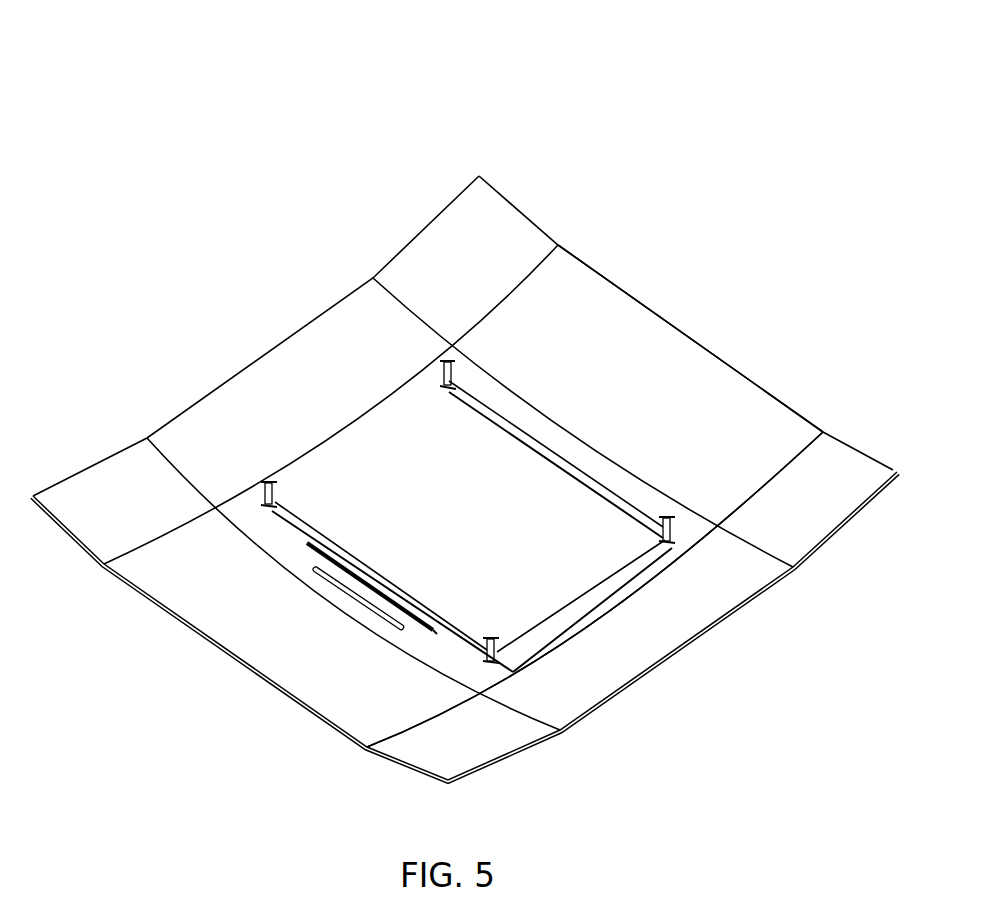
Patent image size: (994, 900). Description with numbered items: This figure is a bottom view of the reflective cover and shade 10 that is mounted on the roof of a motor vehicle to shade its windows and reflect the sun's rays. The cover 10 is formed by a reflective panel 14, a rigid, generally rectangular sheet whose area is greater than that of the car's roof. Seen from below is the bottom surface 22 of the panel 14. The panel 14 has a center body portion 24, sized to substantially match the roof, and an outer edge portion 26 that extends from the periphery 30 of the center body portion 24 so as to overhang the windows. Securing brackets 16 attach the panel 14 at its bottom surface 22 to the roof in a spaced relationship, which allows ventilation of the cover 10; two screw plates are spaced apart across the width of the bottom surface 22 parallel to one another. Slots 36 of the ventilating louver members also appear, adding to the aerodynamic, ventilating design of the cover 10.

The reflective cover and shade 10 is at (502, 137).
The reflective panel 14 is at (612, 270).
The securing brackets 16 is at (438, 386).
The bottom surface 22 is at (493, 538).
The center body portion 24 is at (603, 580).
The outer edge portion 26 is at (733, 400).
The periphery 30 is at (578, 434).
The slots 36 is at (305, 545).